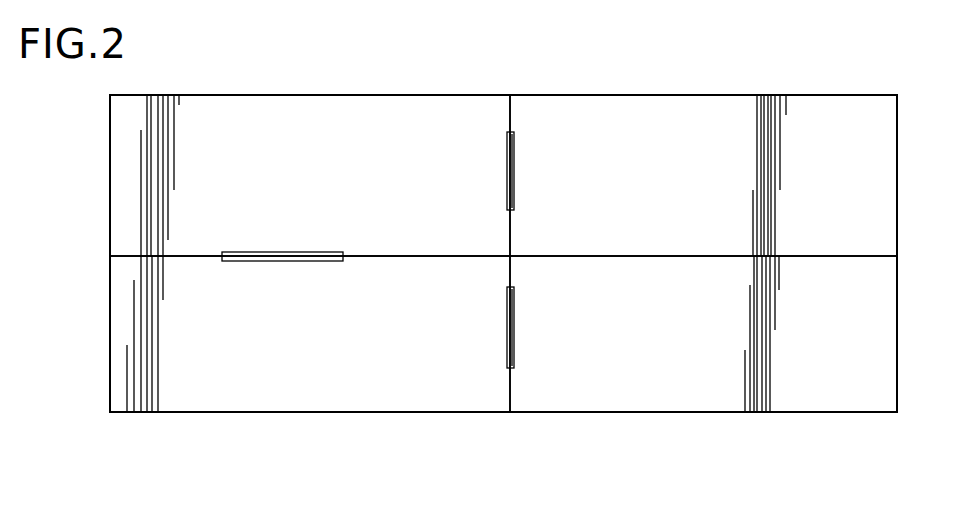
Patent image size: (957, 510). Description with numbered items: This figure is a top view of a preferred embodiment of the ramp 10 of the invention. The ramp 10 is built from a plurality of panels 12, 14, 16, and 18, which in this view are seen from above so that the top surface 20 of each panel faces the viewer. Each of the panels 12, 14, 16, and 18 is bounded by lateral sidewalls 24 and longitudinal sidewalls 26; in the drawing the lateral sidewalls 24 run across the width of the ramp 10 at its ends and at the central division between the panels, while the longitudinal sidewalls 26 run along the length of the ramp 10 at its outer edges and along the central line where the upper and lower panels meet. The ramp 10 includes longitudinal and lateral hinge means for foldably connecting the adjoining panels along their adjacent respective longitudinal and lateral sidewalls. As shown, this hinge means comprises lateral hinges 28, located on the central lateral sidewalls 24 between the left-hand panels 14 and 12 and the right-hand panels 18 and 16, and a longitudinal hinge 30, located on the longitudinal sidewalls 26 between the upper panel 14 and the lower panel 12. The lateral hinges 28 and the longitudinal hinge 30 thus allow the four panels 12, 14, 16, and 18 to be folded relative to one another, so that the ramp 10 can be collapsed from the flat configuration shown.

The ramp 10 is at (240, 72).
The panel 12 is at (306, 333).
The panel 14 is at (309, 183).
The panel 16 is at (700, 325).
The panel 18 is at (703, 183).
The top surface 20 is at (452, 108).
The lateral sidewalls 24 is at (110, 172).
The longitudinal sidewalls 26 is at (314, 95).
The lateral hinges 28 is at (516, 168).
The longitudinal hinge 30 is at (270, 252).